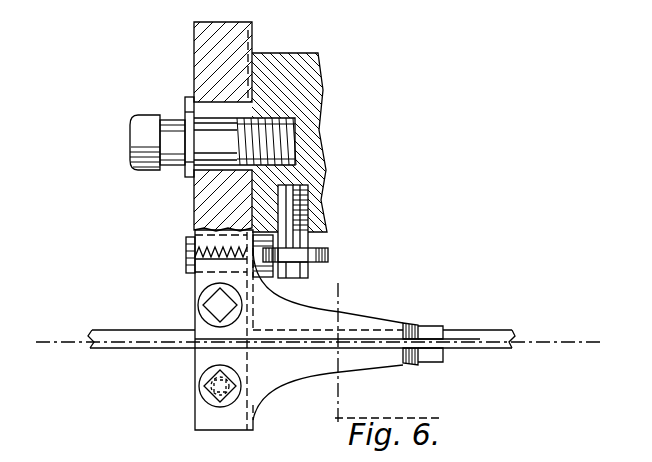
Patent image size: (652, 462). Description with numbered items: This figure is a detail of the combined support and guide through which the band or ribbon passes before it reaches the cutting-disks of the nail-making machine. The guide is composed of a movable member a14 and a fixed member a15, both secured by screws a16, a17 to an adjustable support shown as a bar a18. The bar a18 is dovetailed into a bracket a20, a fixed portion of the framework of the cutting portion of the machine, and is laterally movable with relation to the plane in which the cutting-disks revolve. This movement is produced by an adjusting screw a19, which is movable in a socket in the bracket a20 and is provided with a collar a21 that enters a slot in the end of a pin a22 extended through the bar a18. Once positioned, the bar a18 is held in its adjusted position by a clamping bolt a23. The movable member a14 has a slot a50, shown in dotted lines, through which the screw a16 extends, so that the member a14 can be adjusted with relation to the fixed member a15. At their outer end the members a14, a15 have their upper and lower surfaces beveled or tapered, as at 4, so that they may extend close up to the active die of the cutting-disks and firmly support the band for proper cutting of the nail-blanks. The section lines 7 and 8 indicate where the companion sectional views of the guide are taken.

The beveled outer end surface 4 is at (419, 326).
The section line 7- 7 is at (308, 344).
The section line 8- 8 is at (338, 355).
The movable member a14 is at (272, 383).
The fixed member a15 is at (245, 283).
The screw a16 is at (209, 386).
The screw a17 is at (212, 304).
The bar a18 is at (168, 172).
The adjusting screw a19 is at (305, 240).
The bracket a20 is at (326, 196).
The collar a21 is at (328, 256).
The pin a22 is at (187, 252).
The clamping bolt a23 is at (213, 137).
The slot a50 is at (211, 400).